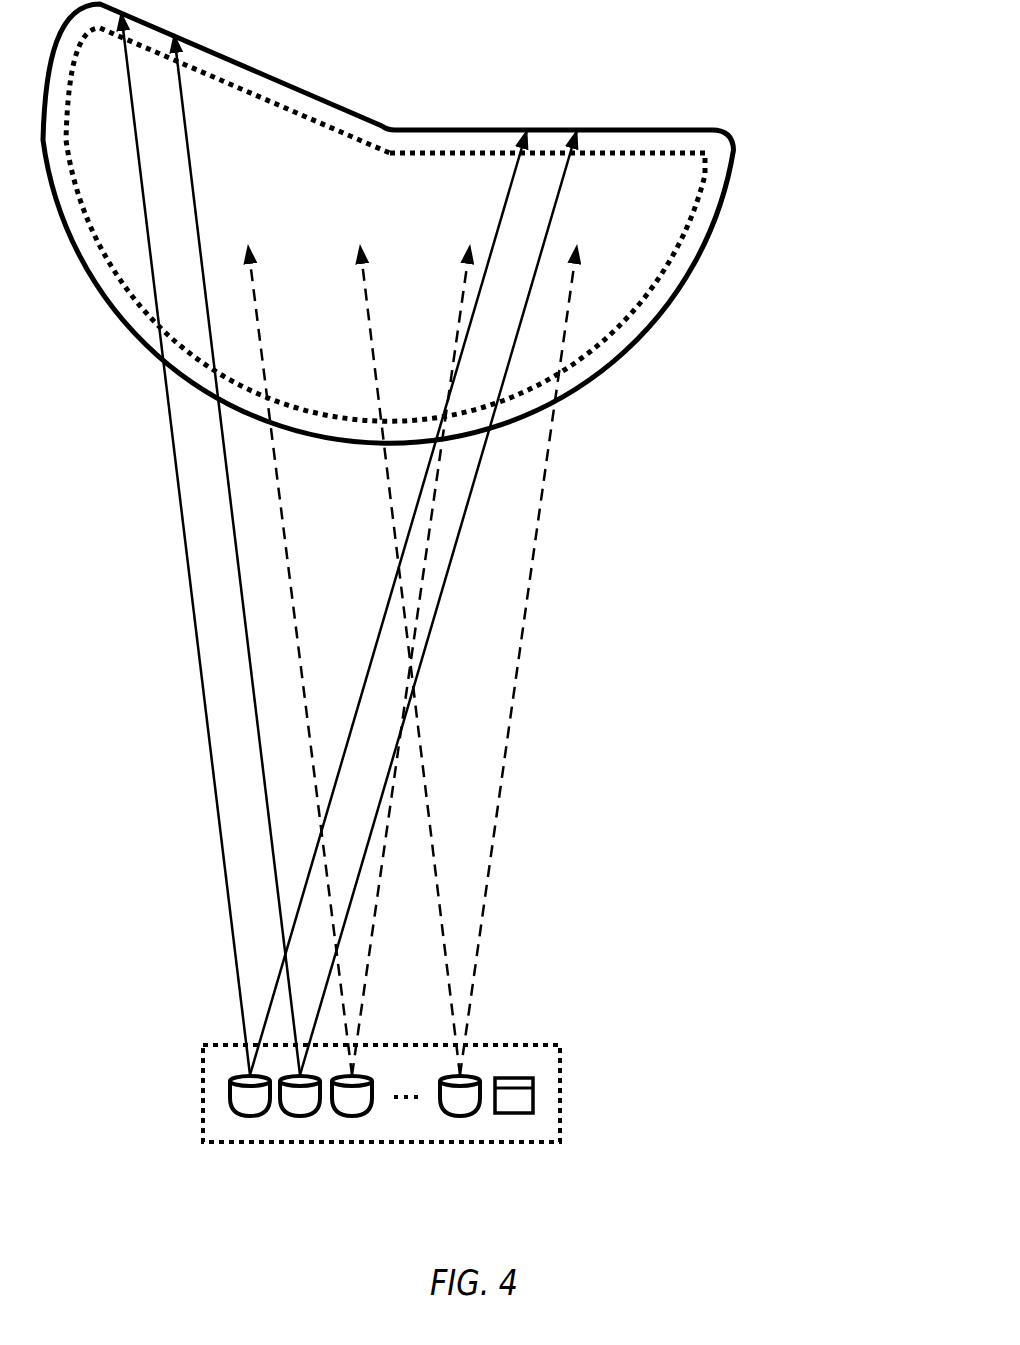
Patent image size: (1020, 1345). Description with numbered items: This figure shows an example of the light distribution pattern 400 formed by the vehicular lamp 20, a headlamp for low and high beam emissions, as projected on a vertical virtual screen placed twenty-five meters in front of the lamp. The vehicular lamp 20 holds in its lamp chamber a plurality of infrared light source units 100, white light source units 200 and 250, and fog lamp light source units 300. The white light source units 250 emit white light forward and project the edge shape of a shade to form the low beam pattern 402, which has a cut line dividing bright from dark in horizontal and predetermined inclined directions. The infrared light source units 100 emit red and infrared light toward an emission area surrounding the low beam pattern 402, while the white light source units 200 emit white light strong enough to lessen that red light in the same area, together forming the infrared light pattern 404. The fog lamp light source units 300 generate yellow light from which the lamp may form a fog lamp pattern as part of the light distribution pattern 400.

The light distribution pattern 400 is at (470, 223).
The infrared light pattern 404 is at (700, 263).
The low beam pattern 402 is at (623, 321).
The vehicular lamp 20 is at (417, 1142).
The infrared light source units 100 is at (250, 1116).
The white light source units 200 is at (300, 1116).
The white light source units 250 is at (352, 1116).
The fog lamp light source units 300 is at (515, 1113).